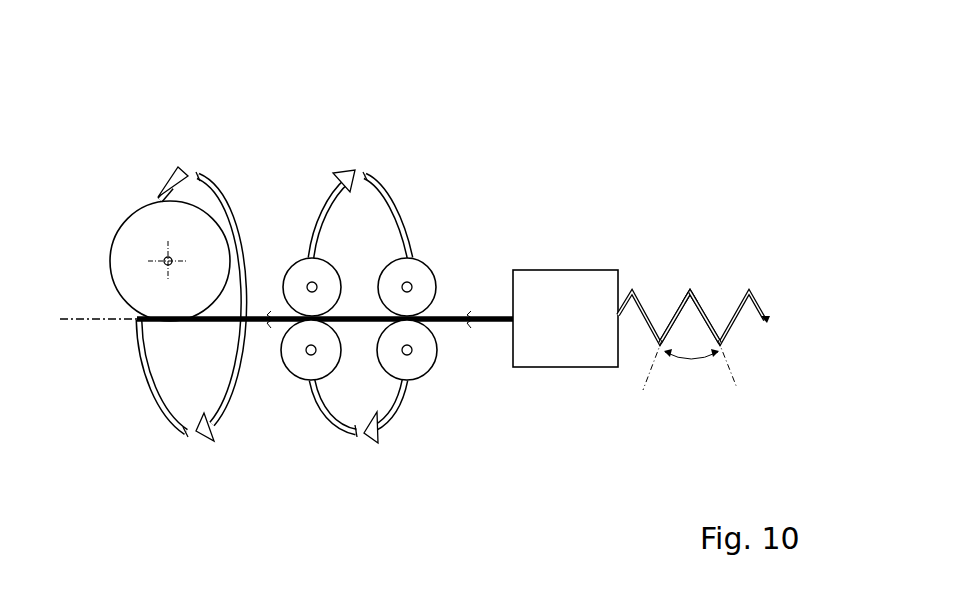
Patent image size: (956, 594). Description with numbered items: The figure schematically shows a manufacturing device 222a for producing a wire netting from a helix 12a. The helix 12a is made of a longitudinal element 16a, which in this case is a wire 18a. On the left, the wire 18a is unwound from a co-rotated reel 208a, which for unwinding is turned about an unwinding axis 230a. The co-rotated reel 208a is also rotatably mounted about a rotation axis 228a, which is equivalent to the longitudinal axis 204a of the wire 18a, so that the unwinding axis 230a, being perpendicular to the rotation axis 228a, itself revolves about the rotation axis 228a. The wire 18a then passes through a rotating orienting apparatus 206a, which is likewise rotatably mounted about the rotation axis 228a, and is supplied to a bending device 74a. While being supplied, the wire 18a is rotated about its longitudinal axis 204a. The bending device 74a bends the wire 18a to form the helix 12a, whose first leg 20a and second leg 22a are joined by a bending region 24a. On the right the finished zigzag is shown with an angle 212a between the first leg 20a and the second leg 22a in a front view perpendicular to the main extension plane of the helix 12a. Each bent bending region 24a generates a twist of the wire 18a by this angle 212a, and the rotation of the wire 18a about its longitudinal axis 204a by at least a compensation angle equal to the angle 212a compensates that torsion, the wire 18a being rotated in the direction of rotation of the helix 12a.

The unwinding axis 230a is at (153, 258).
The co-rotated reel 208a is at (197, 240).
The longitudinal axis 204a is at (102, 320).
The rotation axis 228a is at (102, 320).
The manufacturing device 222a is at (391, 153).
The rotating orienting apparatus 206a is at (365, 262).
The longitudinal element 16a is at (446, 322).
The wire 18a is at (446, 322).
The bending device 74a is at (567, 327).
The first leg 20a is at (680, 307).
The bending region 24a is at (690, 291).
The helix 12a is at (698, 299).
The second leg 22a is at (703, 313).
The angle 212a is at (690, 362).